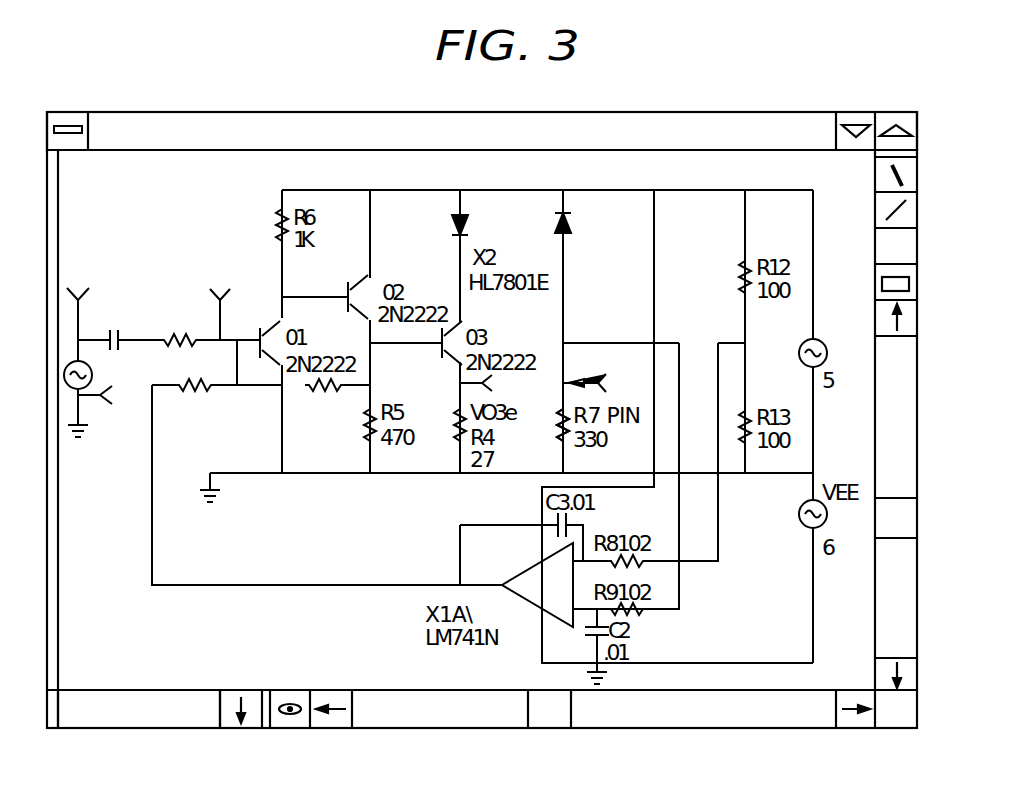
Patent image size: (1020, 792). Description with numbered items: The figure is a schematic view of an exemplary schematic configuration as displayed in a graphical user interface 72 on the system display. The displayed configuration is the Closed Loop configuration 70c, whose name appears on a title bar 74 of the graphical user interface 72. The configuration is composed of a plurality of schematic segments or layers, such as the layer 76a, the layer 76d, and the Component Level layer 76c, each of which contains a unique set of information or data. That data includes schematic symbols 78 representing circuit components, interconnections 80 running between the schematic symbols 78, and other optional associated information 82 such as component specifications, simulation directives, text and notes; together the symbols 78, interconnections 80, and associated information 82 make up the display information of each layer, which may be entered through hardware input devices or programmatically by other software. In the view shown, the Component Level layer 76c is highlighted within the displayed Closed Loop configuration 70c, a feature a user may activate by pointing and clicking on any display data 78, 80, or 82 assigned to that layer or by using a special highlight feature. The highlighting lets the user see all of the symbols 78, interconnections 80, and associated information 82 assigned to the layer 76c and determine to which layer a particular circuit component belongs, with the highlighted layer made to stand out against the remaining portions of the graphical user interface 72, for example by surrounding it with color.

The Closed Loop configuration 70c is at (126, 597).
The graphical user interface 72 is at (776, 92).
The title bar 74 is at (213, 122).
The layer 76a is at (282, 196).
The Component Level layer 76c is at (206, 725).
The layer 76d is at (262, 586).
The schematic symbols 78 is at (799, 520).
The interconnections 80 is at (733, 663).
The associated information 82 is at (320, 437).